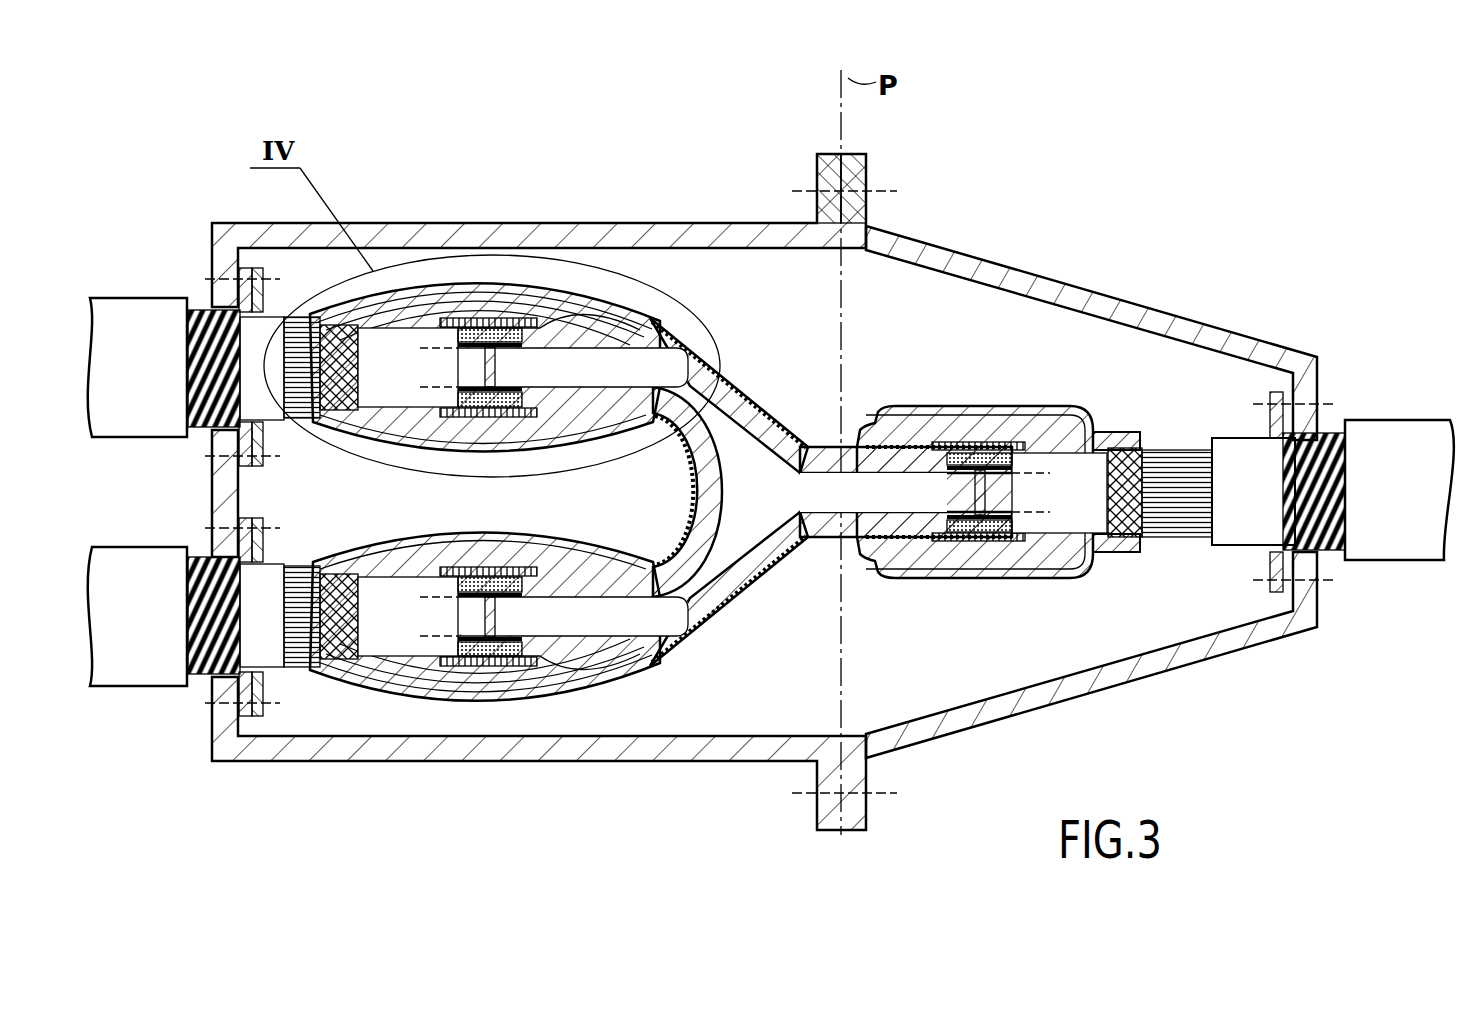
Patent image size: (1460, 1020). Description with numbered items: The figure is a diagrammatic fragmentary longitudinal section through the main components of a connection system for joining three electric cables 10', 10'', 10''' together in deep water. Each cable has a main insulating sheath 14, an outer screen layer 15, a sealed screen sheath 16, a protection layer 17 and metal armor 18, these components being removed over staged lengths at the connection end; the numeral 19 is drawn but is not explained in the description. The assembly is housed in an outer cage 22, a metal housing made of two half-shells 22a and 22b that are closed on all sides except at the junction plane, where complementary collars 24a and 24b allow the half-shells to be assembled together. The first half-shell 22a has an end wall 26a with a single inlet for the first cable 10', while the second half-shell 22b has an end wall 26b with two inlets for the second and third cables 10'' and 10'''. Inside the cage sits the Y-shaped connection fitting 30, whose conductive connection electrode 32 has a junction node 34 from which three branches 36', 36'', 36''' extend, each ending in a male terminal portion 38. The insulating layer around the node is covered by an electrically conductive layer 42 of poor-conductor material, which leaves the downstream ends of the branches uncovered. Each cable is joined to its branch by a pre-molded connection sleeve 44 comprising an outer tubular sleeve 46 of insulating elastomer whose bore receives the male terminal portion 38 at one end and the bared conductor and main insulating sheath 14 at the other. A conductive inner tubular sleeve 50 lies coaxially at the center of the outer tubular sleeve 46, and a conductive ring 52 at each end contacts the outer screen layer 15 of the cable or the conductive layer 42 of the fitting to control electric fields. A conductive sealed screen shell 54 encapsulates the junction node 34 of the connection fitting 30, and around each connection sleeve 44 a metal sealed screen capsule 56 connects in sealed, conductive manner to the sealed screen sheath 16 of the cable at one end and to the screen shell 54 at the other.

The first electric cable 10' is at (1441, 376).
The second electric cable 10'' is at (111, 224).
The third electric cable 10''' is at (113, 760).
The main insulating sheath 14 is at (405, 340).
The outer screen layer 15 is at (306, 350).
The sealed screen sheath 16 is at (298, 410).
The protection layer 17 is at (245, 410).
The metal armor 18 is at (205, 312).
The cable sheath 19 is at (130, 307).
The outer cage 22 is at (990, 265).
The first half-shell 22a is at (938, 250).
The second half-shell 22b is at (720, 223).
The collar 24a is at (866, 178).
The collar 24b is at (817, 178).
The end wall 26a is at (1300, 592).
The end wall 26b is at (235, 495).
The connection fitting 30 is at (774, 597).
The conductive connection electrode 32 is at (775, 410).
The junction node 34 is at (770, 480).
The branch 36' is at (939, 533).
The branch 36'' is at (729, 360).
The branch 36''' is at (729, 618).
The male terminal portion 38 is at (945, 440).
The electrically conductive layer 42 is at (636, 558).
The connection sleeve 44 is at (605, 335).
The outer tubular sleeve 46 is at (470, 290).
The conductive inner tubular sleeve 50 is at (525, 335).
The conductive ring 52 is at (360, 305).
The conductive sealed screen shell 54 is at (740, 380).
The conductive sealed screen capsule 56 is at (565, 295).